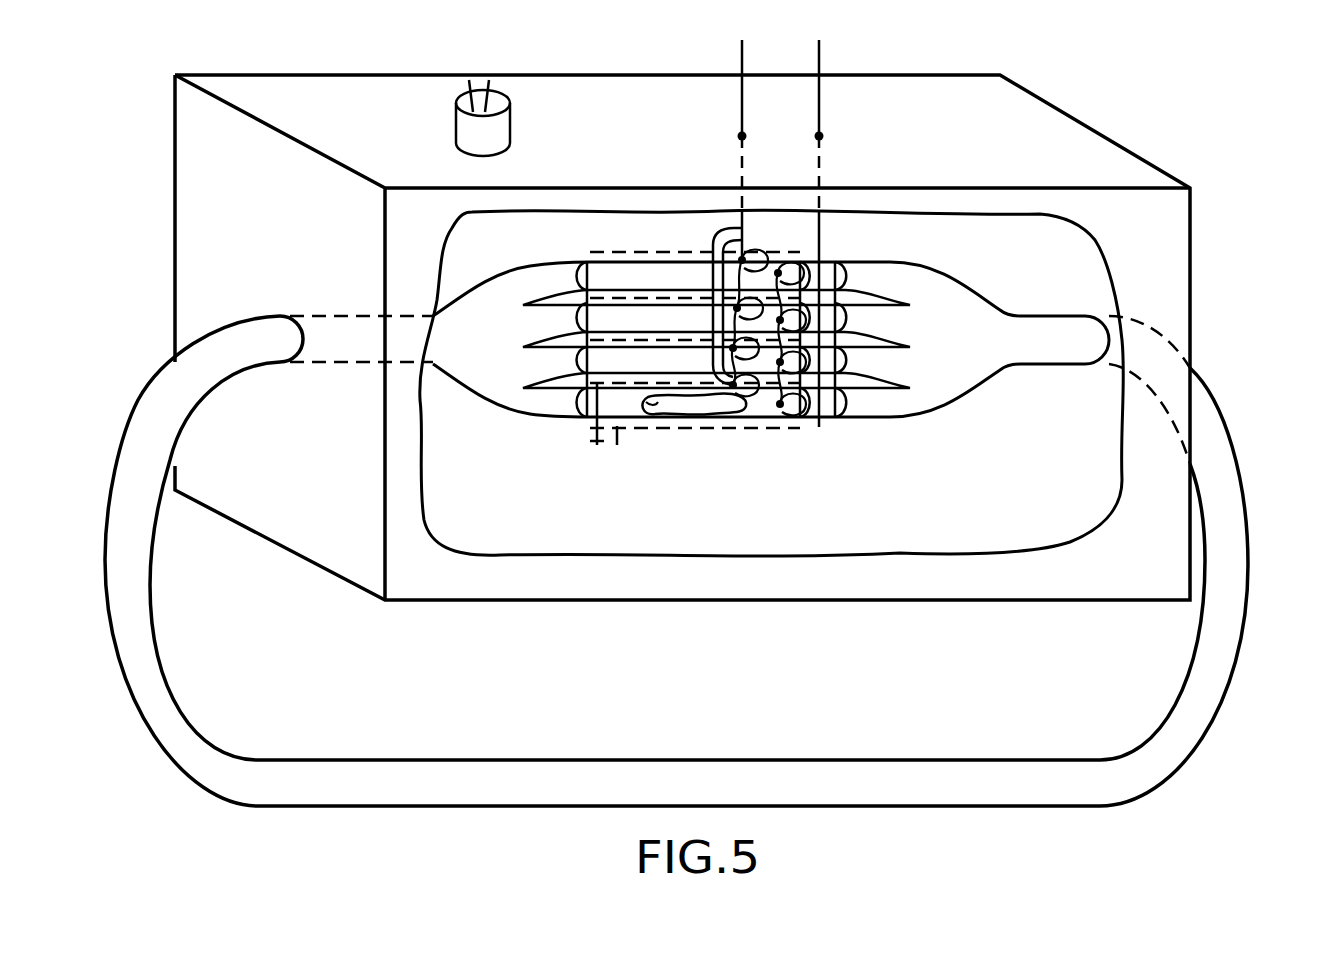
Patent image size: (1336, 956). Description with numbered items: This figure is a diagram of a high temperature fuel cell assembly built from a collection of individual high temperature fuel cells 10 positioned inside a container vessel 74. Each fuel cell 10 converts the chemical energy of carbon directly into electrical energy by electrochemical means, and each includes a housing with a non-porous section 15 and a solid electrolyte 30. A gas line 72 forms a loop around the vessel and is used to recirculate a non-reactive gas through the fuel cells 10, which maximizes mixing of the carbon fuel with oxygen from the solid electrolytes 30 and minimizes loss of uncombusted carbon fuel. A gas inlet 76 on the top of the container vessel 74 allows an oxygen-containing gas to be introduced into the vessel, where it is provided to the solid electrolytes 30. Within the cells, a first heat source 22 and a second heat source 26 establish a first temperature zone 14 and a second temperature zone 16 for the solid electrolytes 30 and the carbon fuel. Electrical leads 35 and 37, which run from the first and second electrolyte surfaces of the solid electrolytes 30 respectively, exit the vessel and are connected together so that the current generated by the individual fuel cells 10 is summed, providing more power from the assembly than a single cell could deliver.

The high temperature fuel cell 10 is at (771, 287).
The first temperature zone 14 is at (738, 406).
The non-porous section 15 is at (650, 312).
The second temperature zone 16 is at (655, 414).
The first heat source 22 is at (780, 271).
The second heat source 26 is at (618, 298).
The solid electrolyte 30 is at (767, 430).
The electrical lead 35 is at (715, 240).
The electrical lead 37 is at (779, 270).
The gas line 72 is at (1250, 554).
The container vessel 74 is at (1195, 262).
The gas inlet 76 is at (512, 118).